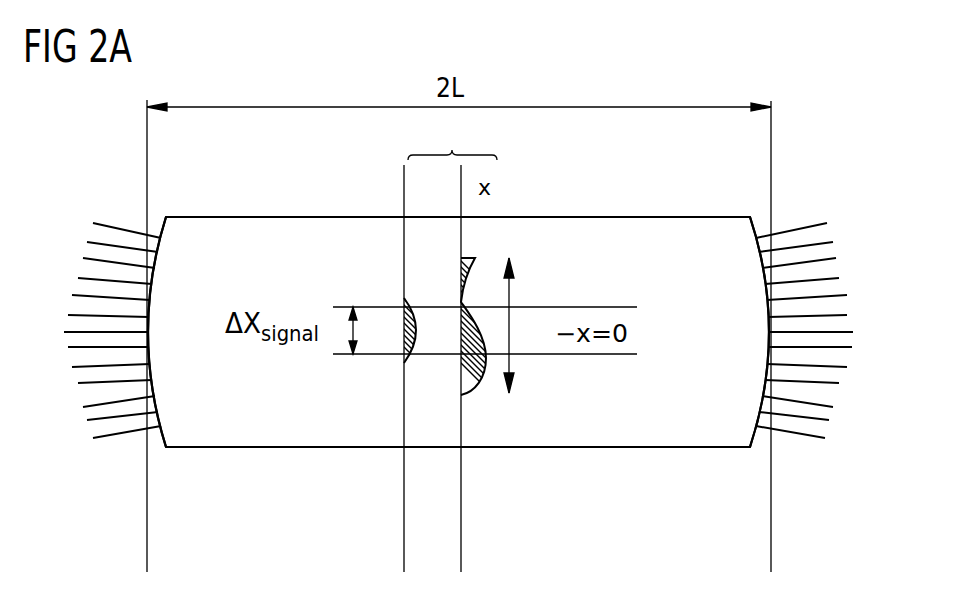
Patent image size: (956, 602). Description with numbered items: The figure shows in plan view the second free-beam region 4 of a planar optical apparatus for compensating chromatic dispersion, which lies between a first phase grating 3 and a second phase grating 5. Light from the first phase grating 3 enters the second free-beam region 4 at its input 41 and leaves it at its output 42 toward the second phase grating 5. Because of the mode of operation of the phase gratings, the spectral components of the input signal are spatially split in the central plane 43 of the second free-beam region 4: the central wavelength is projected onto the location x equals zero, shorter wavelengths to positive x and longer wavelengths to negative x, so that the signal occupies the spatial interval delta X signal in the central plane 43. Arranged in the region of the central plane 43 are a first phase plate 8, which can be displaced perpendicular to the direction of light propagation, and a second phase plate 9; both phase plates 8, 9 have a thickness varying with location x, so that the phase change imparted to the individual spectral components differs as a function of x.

The first phase grating 3 is at (73, 362).
The second free-beam region 4 is at (574, 443).
The input 41 is at (157, 400).
The output 42 is at (765, 388).
The central plane 43 is at (450, 346).
The second phase grating 5 is at (840, 305).
The first phase plate 8 is at (470, 397).
The second phase plate 9 is at (404, 300).